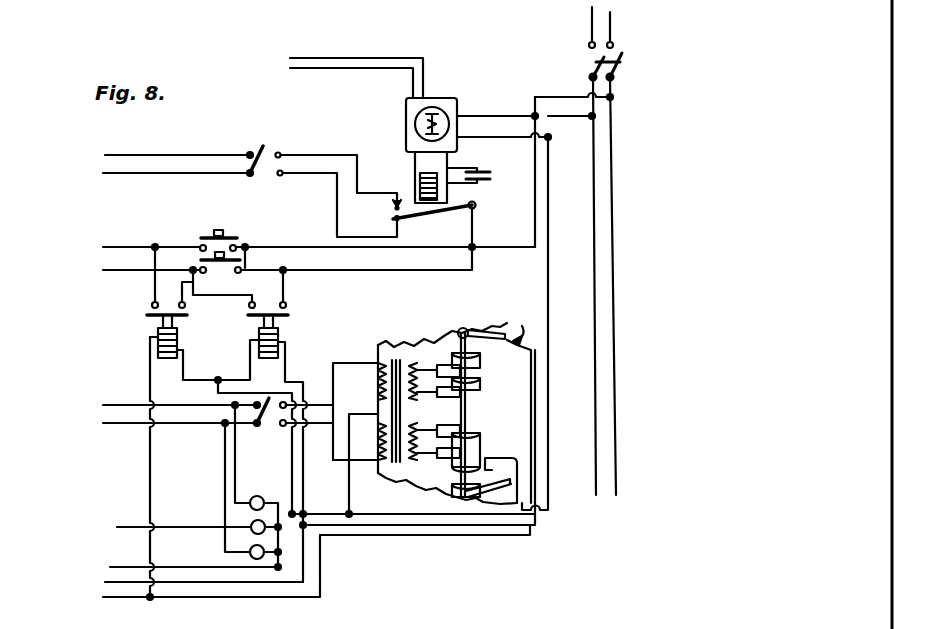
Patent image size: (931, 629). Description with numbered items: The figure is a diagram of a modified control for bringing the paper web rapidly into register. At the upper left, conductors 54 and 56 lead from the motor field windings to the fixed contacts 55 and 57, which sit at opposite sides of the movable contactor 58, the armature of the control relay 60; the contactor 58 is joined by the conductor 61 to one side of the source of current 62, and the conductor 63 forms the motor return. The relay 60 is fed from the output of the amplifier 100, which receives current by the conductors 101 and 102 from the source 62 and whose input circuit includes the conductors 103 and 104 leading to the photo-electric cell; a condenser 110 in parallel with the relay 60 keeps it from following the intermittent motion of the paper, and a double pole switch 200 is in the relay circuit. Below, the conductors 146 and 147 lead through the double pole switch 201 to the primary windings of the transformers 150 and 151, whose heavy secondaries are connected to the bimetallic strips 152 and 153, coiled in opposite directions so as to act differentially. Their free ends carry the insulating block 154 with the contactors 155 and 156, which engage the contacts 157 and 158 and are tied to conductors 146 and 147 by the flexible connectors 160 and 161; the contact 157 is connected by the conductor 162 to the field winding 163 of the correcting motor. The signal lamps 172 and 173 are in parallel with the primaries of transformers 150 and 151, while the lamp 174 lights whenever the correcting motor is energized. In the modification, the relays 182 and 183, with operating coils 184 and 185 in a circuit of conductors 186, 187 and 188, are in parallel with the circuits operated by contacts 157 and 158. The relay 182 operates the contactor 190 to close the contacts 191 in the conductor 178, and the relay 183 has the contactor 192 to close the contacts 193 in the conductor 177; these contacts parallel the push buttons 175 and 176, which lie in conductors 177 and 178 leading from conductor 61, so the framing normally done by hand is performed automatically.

The conductor 54 is at (195, 153).
The conductor 56 is at (198, 176).
The double pole switch 200 is at (260, 148).
The conductor 103 is at (373, 56).
The conductor 104 is at (358, 69).
The amplifier 100 is at (470, 95).
The conductor 101 is at (528, 116).
The conductor 102 is at (525, 138).
The condenser 110 is at (491, 176).
The control relay 60 is at (420, 186).
The fixed contact 55 is at (390, 208).
The fixed contact 57 is at (391, 222).
The movable contactor 58 is at (465, 213).
The conductor 61 is at (590, 96).
The source of current 62 is at (597, 160).
The conductor 63 is at (550, 440).
The conductor 162 is at (538, 478).
The conductor 177 is at (300, 247).
The conductor 178 is at (379, 271).
The push button 175 is at (258, 226).
The push button 176 is at (212, 261).
The contactor 192 is at (150, 314).
The contacts 193 is at (178, 302).
The contacts 191 is at (272, 298).
The contactor 190 is at (288, 305).
The operating coil 185 is at (185, 318).
The operating coil 184 is at (290, 318).
The relay 183 is at (150, 341).
The relay 182 is at (258, 338).
The conductor 187 is at (236, 380).
The conductor 186 is at (320, 370).
The conductor 188 is at (150, 470).
The conductor 146 is at (130, 405).
The conductor 147 is at (125, 424).
The double pole switch 201 is at (266, 421).
The signal lamp 172 is at (266, 489).
The signal lamp 174 is at (252, 522).
The signal lamp 173 is at (250, 554).
The field winding 163 is at (232, 584).
The flexible connector 160 is at (430, 342).
The flexible connector 161 is at (412, 490).
The transformer 150 is at (375, 360).
The second transformer 151 is at (418, 414).
The bimetallic strip 152 is at (481, 370).
The insulating block 154 is at (481, 392).
The bimetallic strip 153 is at (481, 433).
The contactor 155 is at (490, 329).
The contact 157 is at (531, 325).
The contactor 156 is at (507, 498).
The contact 158 is at (515, 452).